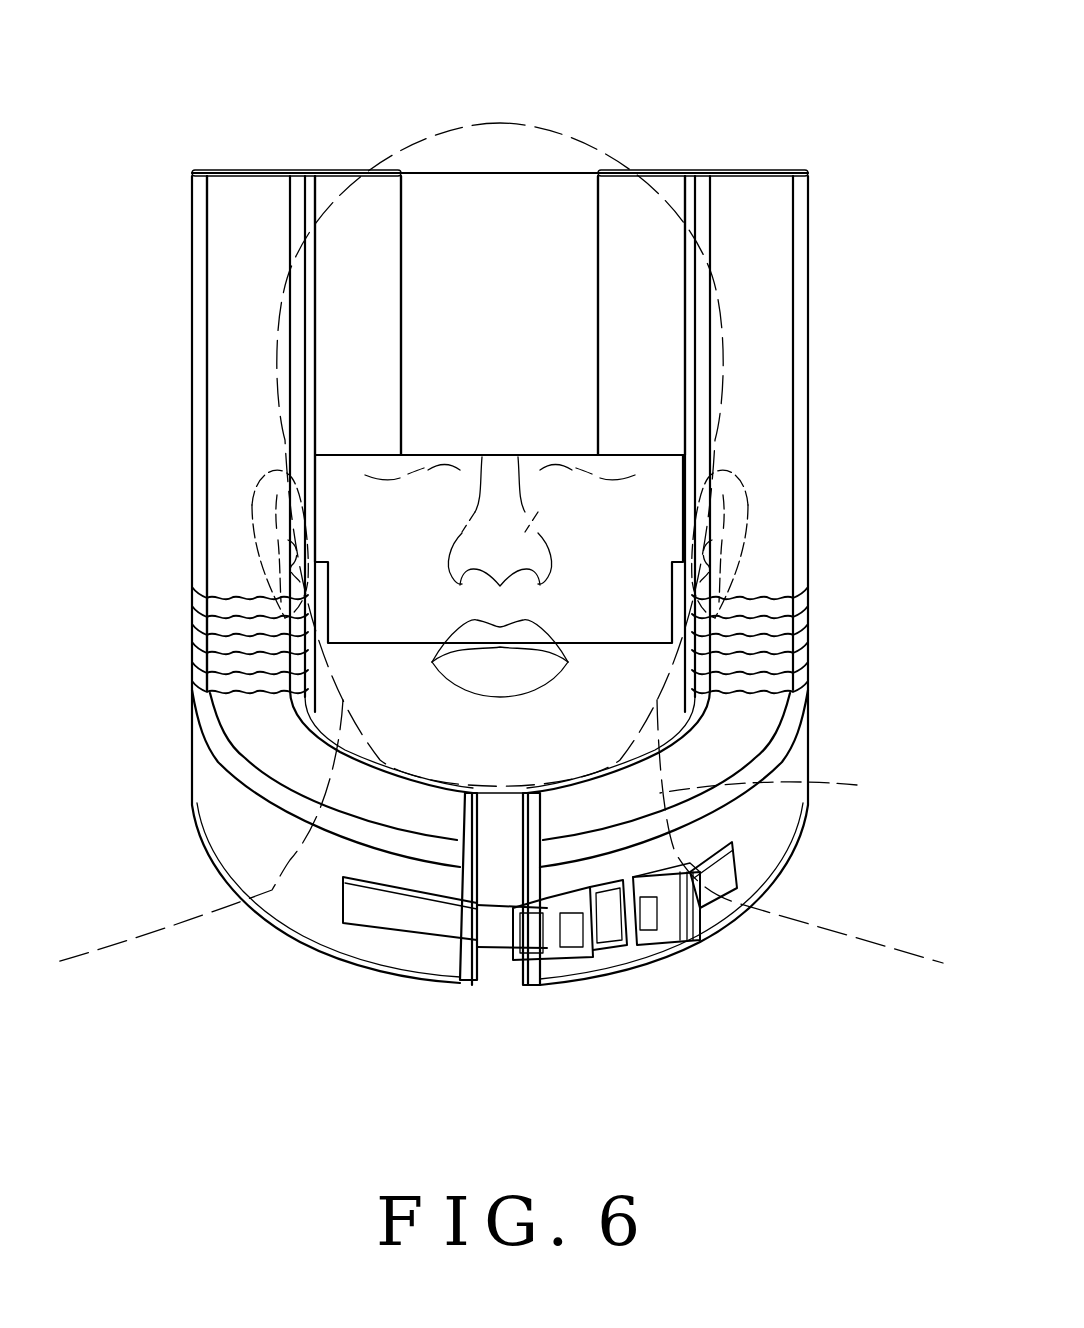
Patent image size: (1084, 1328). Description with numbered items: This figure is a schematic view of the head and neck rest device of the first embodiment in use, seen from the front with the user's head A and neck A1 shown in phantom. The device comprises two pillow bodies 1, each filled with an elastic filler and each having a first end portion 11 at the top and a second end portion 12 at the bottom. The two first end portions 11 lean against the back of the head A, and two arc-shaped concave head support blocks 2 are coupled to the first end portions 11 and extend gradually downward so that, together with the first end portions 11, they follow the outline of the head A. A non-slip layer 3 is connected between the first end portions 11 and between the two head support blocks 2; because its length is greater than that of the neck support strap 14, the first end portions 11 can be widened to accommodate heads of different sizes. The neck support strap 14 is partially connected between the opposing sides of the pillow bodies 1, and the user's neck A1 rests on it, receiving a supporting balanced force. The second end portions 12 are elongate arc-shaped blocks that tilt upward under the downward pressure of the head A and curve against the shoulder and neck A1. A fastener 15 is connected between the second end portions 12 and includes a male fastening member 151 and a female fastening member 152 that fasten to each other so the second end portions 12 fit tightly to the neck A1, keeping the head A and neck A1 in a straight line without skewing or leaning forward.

The pillow body 1 is at (455, 577).
The first end portion 11 is at (228, 221).
The second end portion 12 is at (290, 783).
The neck support strap 14 is at (627, 520).
The fastener 15 is at (540, 987).
The male fastening member 151 is at (652, 883).
The female fastening member 152 is at (610, 927).
The head support block 2 is at (360, 212).
The non-slip layer 3 is at (467, 202).
The head A is at (583, 133).
The neck A1 is at (782, 785).